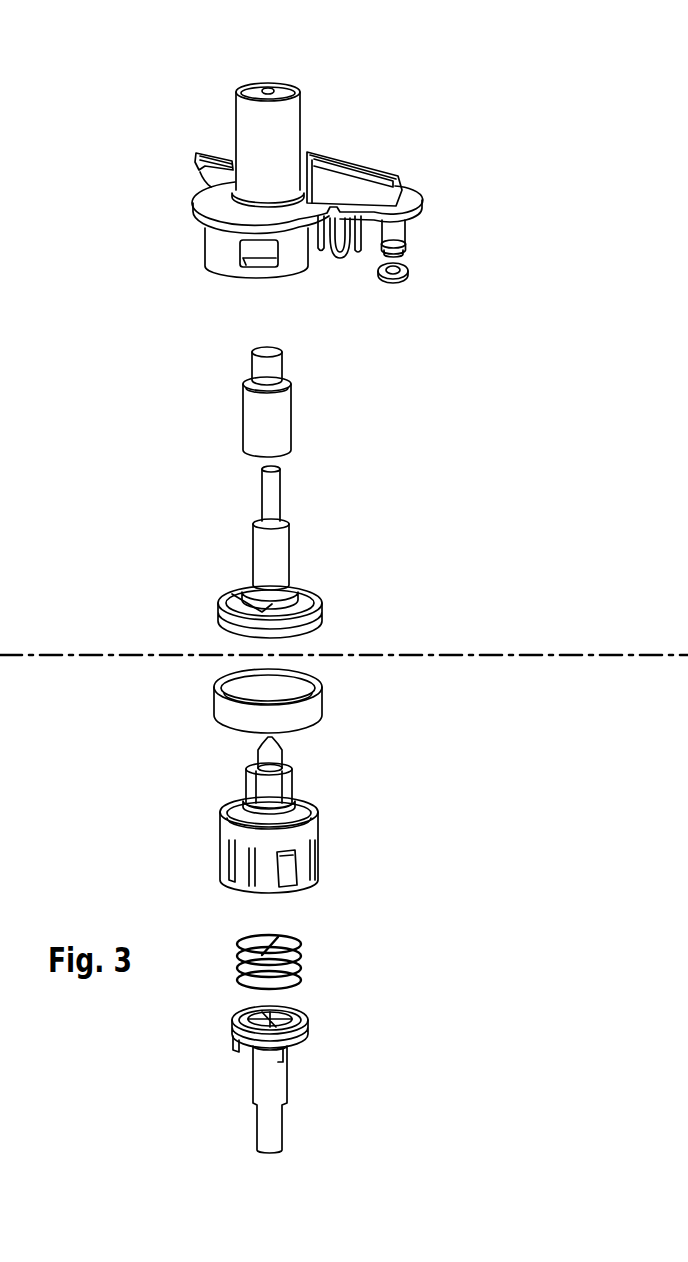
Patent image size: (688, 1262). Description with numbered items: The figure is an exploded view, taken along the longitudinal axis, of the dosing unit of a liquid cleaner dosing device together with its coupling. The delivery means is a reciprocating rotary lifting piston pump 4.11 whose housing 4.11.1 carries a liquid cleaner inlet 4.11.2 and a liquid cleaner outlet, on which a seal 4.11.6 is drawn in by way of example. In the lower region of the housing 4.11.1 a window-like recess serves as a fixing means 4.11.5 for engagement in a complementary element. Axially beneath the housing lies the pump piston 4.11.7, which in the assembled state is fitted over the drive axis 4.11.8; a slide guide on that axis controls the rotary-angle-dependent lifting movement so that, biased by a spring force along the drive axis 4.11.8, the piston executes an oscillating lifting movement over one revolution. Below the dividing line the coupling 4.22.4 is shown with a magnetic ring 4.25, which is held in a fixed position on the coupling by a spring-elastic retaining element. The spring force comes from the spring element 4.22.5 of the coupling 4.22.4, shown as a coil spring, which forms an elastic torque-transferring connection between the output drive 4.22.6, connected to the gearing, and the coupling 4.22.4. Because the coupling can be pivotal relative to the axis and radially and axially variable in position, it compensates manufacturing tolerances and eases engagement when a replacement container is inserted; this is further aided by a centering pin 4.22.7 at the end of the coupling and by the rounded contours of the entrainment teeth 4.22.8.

The reciprocating lifting piston pump 4.11 is at (238, 46).
The housing 4.11.1 is at (281, 130).
The liquid cleaner inlet 4.11.2 is at (197, 156).
The fixing means 4.11.5 is at (246, 264).
The seal 4.11.6 is at (400, 278).
The pump piston 4.11.7 is at (420, 417).
The drive axis 4.11.8 is at (435, 562).
The magnetic ring 4.25 is at (215, 706).
The centering pin 4.22.7 is at (258, 755).
The entrainment teeth 4.22.8 is at (288, 770).
The coupling 4.22.4 is at (433, 823).
The spring element 4.22.5 is at (433, 960).
The output drive 4.22.6 is at (440, 1073).